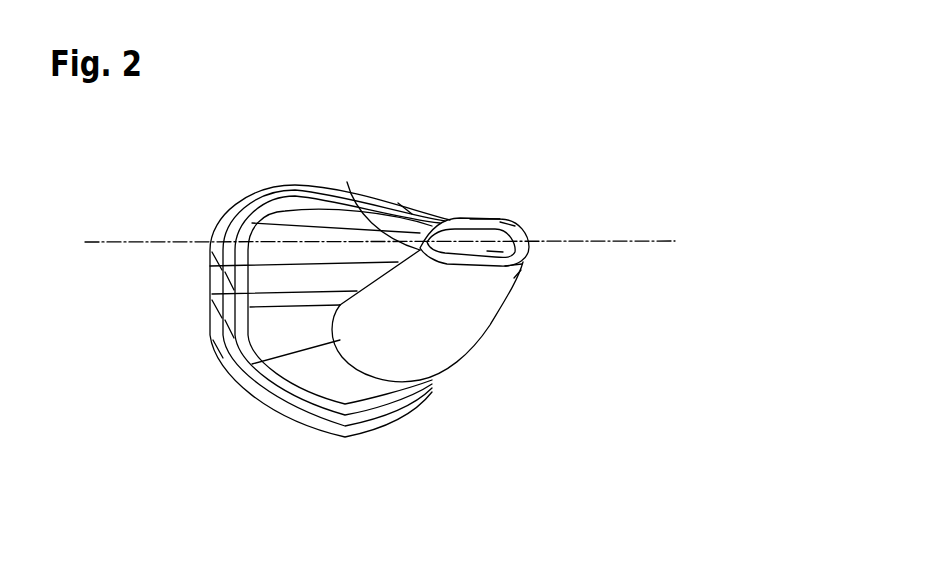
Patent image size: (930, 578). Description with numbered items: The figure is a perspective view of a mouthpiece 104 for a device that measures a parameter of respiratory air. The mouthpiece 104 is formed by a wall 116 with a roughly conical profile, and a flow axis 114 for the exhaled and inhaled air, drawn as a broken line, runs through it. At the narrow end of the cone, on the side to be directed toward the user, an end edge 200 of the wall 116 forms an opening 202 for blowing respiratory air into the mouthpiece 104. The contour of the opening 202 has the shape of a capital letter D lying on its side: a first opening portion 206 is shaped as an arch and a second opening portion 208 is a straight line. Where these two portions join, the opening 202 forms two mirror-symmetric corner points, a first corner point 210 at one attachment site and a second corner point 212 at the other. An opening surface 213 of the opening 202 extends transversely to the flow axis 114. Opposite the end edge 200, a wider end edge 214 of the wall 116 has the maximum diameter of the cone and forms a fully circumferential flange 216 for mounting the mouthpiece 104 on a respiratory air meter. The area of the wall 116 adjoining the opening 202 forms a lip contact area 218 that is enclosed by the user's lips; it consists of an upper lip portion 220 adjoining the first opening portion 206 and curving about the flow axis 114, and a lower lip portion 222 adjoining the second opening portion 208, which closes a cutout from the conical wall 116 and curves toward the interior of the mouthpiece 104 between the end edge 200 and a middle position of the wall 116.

The mouthpiece 104 is at (184, 191).
The flow axis 114 is at (90, 246).
The wall 116 is at (277, 343).
The end edge 200 is at (470, 210).
The opening 202 is at (492, 222).
The first opening portion 206 is at (486, 216).
The second opening portion 208 is at (470, 276).
The first corner point 210 is at (347, 182).
The second corner point 212 is at (523, 267).
The opening surface 213 is at (505, 226).
The wider end edge 214 is at (298, 390).
The flange 216 is at (212, 350).
The lip contact area 218 is at (522, 293).
The upper lip portion 220 is at (410, 212).
The lower lip portion 222 is at (425, 312).